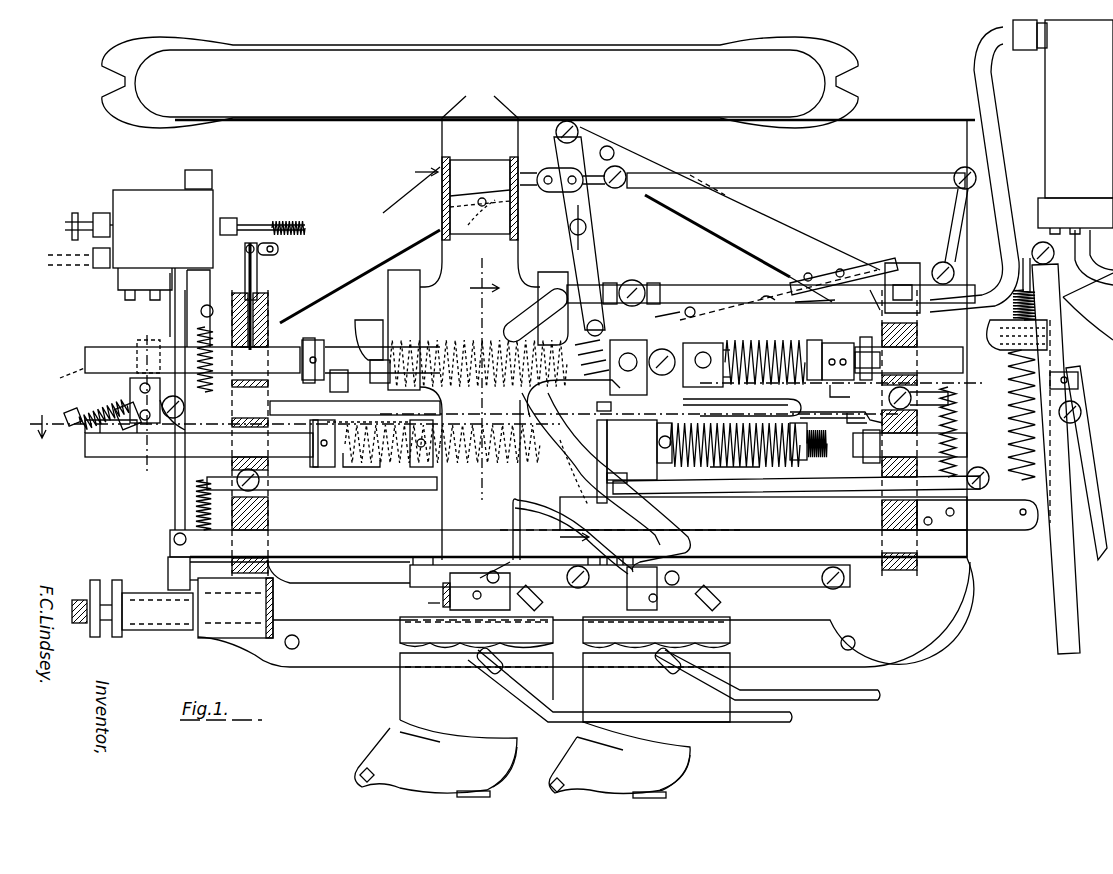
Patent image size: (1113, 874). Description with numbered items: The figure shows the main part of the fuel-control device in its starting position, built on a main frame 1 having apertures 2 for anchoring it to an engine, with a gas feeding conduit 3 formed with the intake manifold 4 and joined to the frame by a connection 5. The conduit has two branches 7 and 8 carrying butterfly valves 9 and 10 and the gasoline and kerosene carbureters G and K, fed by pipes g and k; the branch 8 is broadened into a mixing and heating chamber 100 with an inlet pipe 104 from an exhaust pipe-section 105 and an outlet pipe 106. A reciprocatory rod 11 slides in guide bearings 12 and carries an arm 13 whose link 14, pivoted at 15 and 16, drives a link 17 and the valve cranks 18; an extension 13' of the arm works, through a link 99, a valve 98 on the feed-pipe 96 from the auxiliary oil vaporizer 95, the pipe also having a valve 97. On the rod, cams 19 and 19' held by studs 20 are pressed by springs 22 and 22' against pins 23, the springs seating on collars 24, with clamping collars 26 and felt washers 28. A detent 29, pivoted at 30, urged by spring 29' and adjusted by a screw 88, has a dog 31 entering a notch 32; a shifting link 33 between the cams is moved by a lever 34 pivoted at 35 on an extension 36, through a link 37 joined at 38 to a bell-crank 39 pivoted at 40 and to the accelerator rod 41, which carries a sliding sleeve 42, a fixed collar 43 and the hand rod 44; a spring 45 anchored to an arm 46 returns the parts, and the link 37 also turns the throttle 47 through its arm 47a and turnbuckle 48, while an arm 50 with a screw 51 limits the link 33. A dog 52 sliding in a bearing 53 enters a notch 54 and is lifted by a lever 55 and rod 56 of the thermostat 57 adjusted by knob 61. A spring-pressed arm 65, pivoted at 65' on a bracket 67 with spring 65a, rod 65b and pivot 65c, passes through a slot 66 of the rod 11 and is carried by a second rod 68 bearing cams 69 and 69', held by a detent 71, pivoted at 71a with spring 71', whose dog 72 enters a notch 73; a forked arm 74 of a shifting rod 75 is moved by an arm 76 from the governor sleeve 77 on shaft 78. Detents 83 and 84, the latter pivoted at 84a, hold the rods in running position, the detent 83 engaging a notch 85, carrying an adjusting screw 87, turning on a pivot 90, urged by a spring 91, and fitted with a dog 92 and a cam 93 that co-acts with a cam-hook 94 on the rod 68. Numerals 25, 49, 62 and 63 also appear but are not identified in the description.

The main frame structure 1 is at (350, 668).
The apertures 2 is at (285, 645).
The gas feeding conduit 3 is at (415, 178).
The intake manifold 4 is at (398, 121).
The connection 5 is at (484, 378).
The branch 7 is at (668, 508).
The branch 8 is at (442, 513).
The butterfly valve 9 is at (690, 552).
The butterfly valve 10 is at (506, 493).
The reciprocatory rod 11 is at (92, 356).
The guide bearings 12 is at (262, 347).
The connecting bar 13 is at (763, 513).
The upward and lateral extension 13' is at (838, 271).
The link 14 is at (790, 596).
The pivot 15 is at (876, 582).
The pivot 16 is at (587, 587).
The link 17 is at (712, 560).
The cranks 18 is at (505, 572).
The spring-pressed cam 19 is at (703, 366).
The spring-pressed cam 19' is at (646, 369).
The screw or stud 20 is at (745, 346).
The spring 22 is at (737, 402).
The spring 22' is at (524, 402).
The pins or abutments 23 is at (708, 352).
The collars 24 is at (609, 392).
The rod 25 is at (368, 418).
The clamping collars 26 is at (310, 343).
The cushioning washers 28 is at (302, 361).
The detent or lever 29 is at (355, 396).
The actuating spring 29' is at (186, 359).
The pivot 30 is at (182, 415).
The dog 31 is at (369, 371).
The notch 32 is at (342, 367).
The shifting link 33 is at (630, 357).
The shifting lever 34 is at (592, 268).
The pivot 35 is at (580, 131).
The upward extension 36 is at (705, 229).
The link 37 is at (762, 175).
The pivot 38 is at (570, 228).
The bell-crank lever 39 is at (952, 220).
The pivot 40 is at (937, 263).
The rod or link 41 is at (1068, 356).
The sleeve 42 is at (1080, 394).
The collar or shoulder 43 is at (1080, 375).
The rod or link 44 is at (1062, 586).
The retractile spring 45 is at (1032, 377).
The arm 46 is at (977, 515).
The throttle 47 is at (487, 217).
The arm 47a is at (452, 188).
The turnbuckle 48 is at (562, 190).
The pivot 49 is at (650, 170).
The arm 50 is at (768, 272).
The screw 51 is at (673, 310).
The detent or dog 52 is at (262, 280).
The recess or bearing 53 is at (258, 290).
The notch 54 is at (254, 360).
The bell-crank or lever 55 is at (280, 240).
The reciprocatory rod 56 is at (244, 228).
The thermostat 57 is at (163, 245).
The adjusting knob 61 is at (74, 213).
The fitting 62 is at (195, 160).
The fitting 63 is at (90, 262).
The arm or dog 65 is at (126, 350).
The spring 65a is at (102, 404).
The rod 65b is at (66, 414).
The pivot 65c is at (140, 380).
The pivotal connection 65' is at (123, 416).
The slot 66 is at (60, 379).
The bracket 67 is at (130, 433).
The reciprocating rod 68 is at (85, 447).
The cam 69 is at (634, 461).
The cam 69' is at (565, 472).
The detent or lever 71 is at (322, 492).
The pivot 71a is at (262, 485).
The actuating spring 71' is at (180, 505).
The dog 72 is at (404, 443).
The notch 73 is at (361, 449).
The bifurcated arm 74 is at (644, 482).
The shifting rod 75 is at (568, 546).
The arm 76 is at (168, 563).
The governor-controlled sleeve 77 is at (141, 608).
The shaft 78 is at (80, 598).
The detent 83 is at (819, 441).
The detent 84 is at (760, 496).
The pivot 84a is at (993, 484).
The notch 85 is at (955, 360).
The adjusting screw 87 is at (742, 399).
The screw 88 is at (583, 398).
The screw or pivot 90 is at (952, 404).
The spring 91 is at (958, 448).
The dog 92 is at (854, 402).
The cam 93 is at (790, 398).
The cam-hook 94 is at (735, 478).
The auxiliary oil vaporizer 95 is at (1075, 127).
The feed-pipe 96 is at (676, 285).
The valve 97 is at (636, 282).
The valve 98 is at (902, 285).
The link 99 is at (870, 290).
The mixing and heating chamber 100 is at (430, 296).
The inlet pipe 104 is at (545, 315).
The pipe-section 105 is at (1072, 285).
The outlet pipe 106 is at (364, 331).
The carbureter K is at (454, 725).
The carbureter G is at (639, 725).
The pipe g is at (860, 700).
The rod k is at (765, 724).